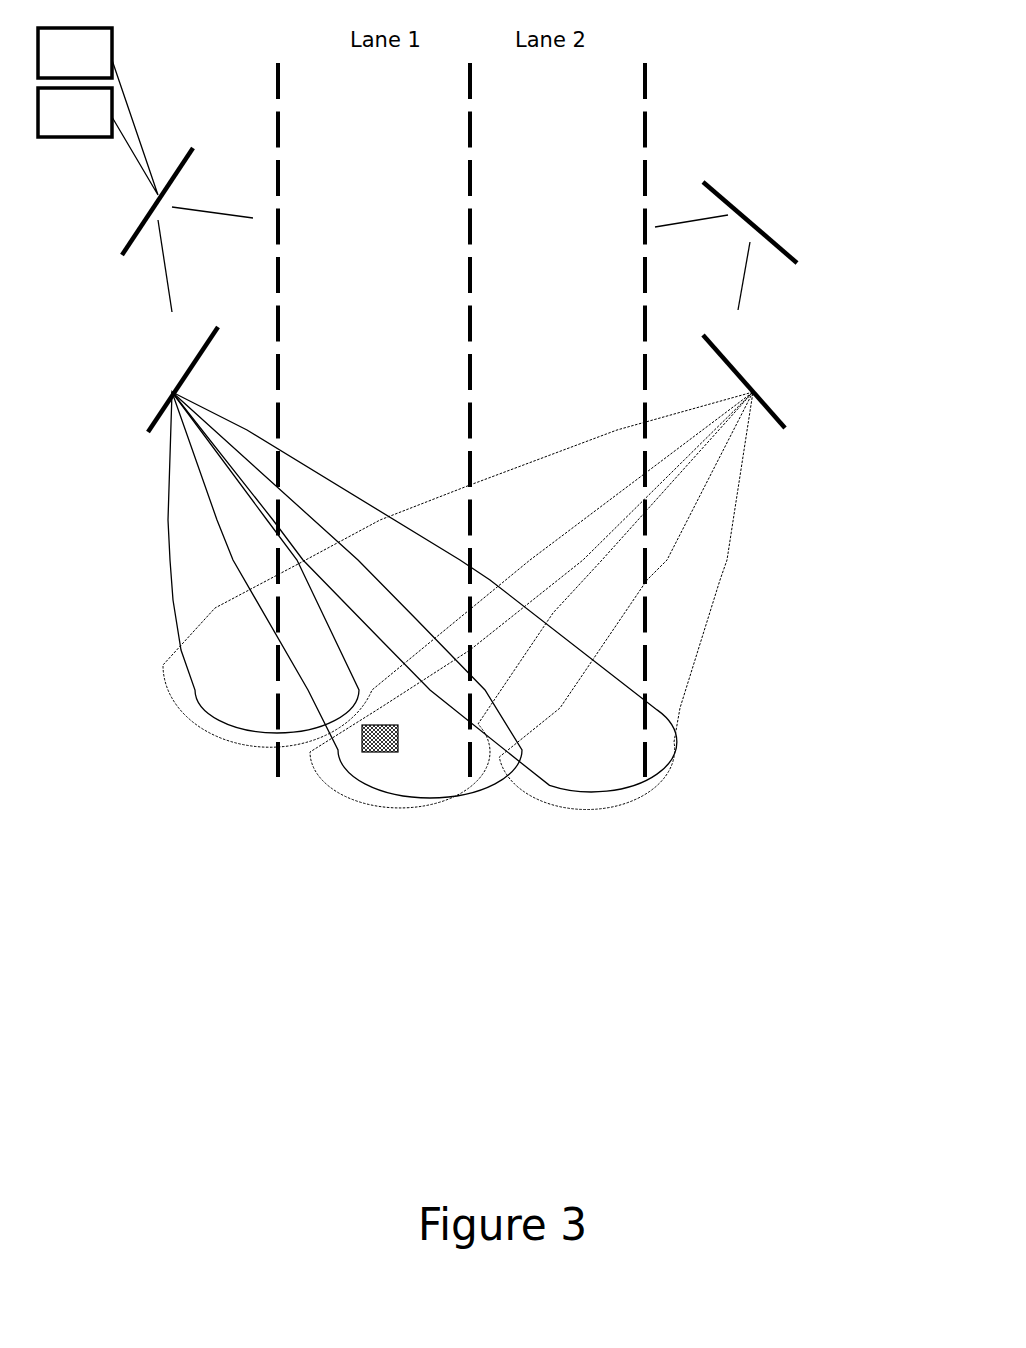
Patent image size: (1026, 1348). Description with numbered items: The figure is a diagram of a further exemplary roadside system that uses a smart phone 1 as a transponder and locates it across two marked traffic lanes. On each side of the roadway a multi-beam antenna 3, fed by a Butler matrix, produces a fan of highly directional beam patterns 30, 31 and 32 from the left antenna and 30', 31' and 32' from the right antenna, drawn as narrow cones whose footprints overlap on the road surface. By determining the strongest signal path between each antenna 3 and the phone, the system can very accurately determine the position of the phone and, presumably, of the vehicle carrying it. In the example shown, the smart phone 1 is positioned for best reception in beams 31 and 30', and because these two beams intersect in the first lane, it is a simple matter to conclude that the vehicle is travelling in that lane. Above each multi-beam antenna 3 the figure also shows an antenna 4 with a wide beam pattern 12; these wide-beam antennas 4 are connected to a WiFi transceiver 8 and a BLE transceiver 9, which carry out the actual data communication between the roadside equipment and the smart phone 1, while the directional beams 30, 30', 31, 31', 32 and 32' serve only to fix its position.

The smart phone 1 is at (398, 738).
The multi-beam antenna 3 is at (192, 360).
The wide beam pattern antenna 4 is at (153, 213).
The WiFi transceiver 8 is at (75, 53).
The BLE transceiver 9 is at (75, 112).
The wide beam pattern 12 is at (193, 242).
The directional beam pattern 30 is at (190, 562).
The directional beam pattern 30' is at (394, 569).
The directional beam pattern 31 is at (347, 665).
The directional beam pattern 31' is at (458, 602).
The directional beam pattern 32 is at (424, 678).
The directional beam pattern 32' is at (688, 601).